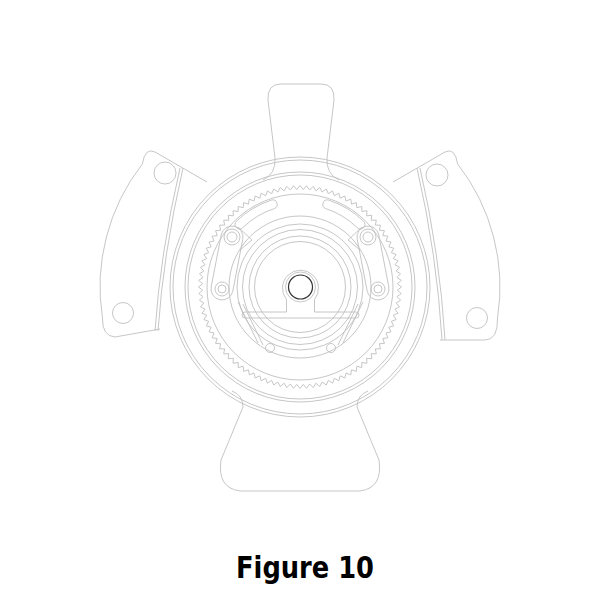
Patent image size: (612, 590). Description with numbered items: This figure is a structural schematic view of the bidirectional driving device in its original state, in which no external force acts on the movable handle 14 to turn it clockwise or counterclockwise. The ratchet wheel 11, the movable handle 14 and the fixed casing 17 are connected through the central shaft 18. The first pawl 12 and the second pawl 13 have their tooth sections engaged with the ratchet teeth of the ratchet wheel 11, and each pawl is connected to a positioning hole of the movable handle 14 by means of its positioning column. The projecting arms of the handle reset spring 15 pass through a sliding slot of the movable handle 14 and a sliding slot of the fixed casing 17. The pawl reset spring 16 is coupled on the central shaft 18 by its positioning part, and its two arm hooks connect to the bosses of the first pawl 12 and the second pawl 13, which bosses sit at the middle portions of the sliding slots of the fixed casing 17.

The ratchet wheel 11 is at (228, 390).
The first pawl 12 is at (220, 258).
The second pawl 13 is at (387, 252).
The movable handle 14 is at (309, 97).
The handle reset spring 15 is at (340, 328).
The pawl reset spring 16 is at (243, 310).
The fixed casing 17 is at (432, 162).
The central shaft 18 is at (303, 290).